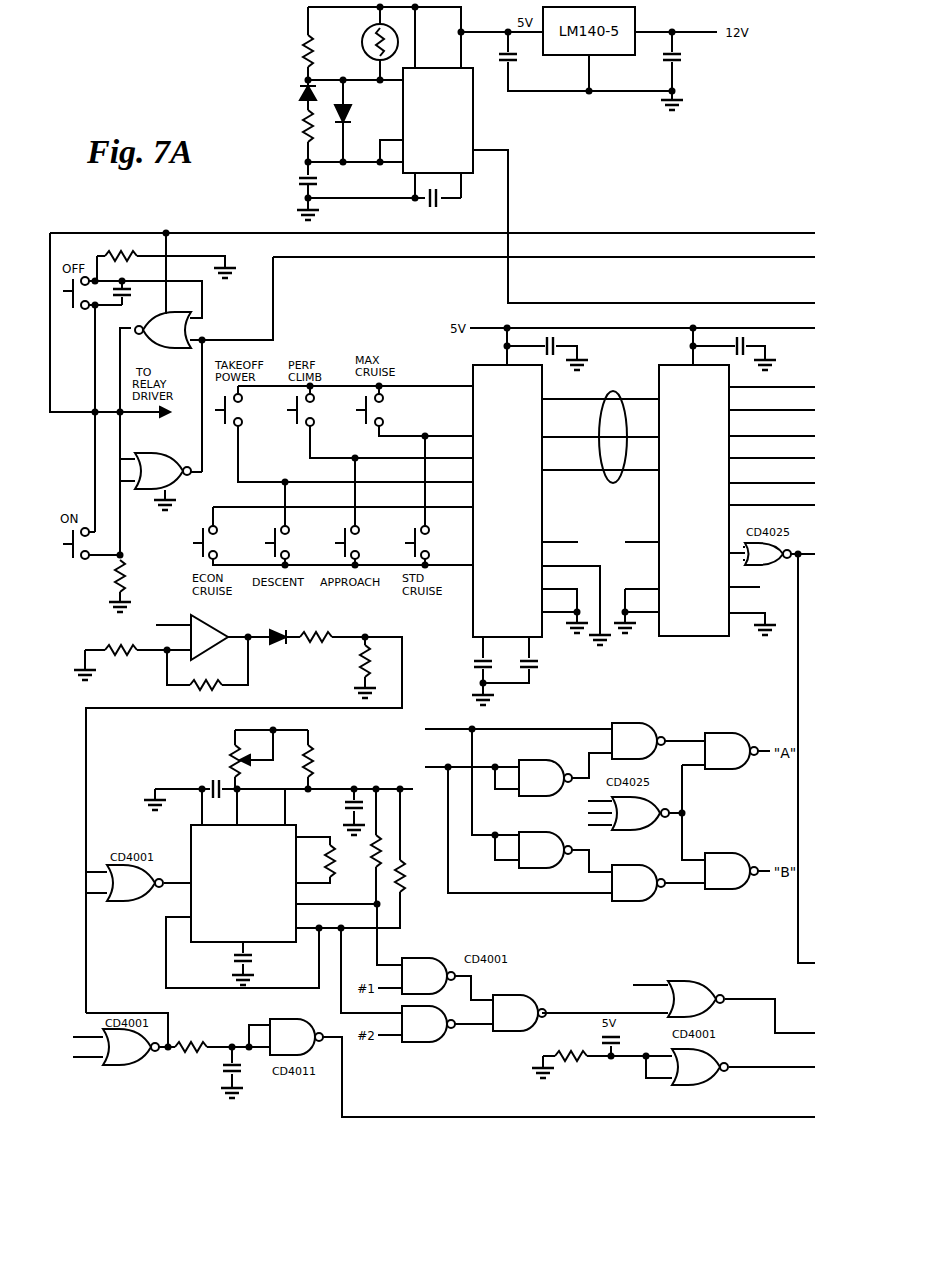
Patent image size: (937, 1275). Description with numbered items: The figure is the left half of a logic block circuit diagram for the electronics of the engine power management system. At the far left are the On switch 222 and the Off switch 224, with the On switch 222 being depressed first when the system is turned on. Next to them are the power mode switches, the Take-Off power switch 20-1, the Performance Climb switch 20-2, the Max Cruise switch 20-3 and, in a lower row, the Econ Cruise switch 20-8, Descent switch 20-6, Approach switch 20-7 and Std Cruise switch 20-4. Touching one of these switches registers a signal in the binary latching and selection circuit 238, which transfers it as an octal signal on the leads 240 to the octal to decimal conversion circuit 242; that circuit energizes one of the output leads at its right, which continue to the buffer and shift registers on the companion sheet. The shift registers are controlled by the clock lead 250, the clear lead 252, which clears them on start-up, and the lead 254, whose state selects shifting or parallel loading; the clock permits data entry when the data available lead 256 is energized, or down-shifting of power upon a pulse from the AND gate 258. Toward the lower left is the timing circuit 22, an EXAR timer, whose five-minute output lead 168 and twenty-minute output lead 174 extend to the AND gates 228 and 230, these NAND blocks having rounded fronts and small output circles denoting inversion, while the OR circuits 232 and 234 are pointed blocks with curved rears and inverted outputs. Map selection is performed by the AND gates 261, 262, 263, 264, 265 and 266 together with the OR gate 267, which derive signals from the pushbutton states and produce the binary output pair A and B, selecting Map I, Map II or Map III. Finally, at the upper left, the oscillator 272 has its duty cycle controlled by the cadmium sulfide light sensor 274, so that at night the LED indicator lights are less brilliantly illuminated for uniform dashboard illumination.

The cadmium sulfide light sensor 274 is at (363, 36).
The oscillator 272 is at (418, 161).
The Off switch 224 is at (73, 310).
The On switch 222 is at (80, 560).
The Take-Off power mode switch 20-1 is at (242, 425).
The power mode switch 20-2 is at (314, 426).
The power mode switch 20-3 is at (384, 402).
The power mode switch 20-4 is at (430, 537).
The power mode switch 20-6 is at (290, 537).
The power mode switch 20-7 is at (360, 537).
The power mode switch 20-8 is at (218, 537).
The binary latching and selection circuit 238 is at (489, 567).
The octal output leads 240 is at (612, 483).
The octal to decimal conversion circuit 242 is at (676, 567).
The timing circuit 22 is at (230, 924).
The five-minute output lead 168 is at (376, 903).
The twenty-minute output lead 174 is at (401, 905).
The OR circuit 232 is at (130, 905).
The OR circuit 234 is at (135, 1065).
The AND gate 228 is at (440, 958).
The AND gate 230 is at (422, 1044).
The AND gate 258 is at (535, 995).
The data available lead 256 is at (652, 983).
The clock lead 250 is at (752, 996).
The clear lead 252 is at (756, 1070).
The shift/load control lead 254 is at (598, 1117).
The AND gate 261 is at (642, 723).
The AND gate 262 is at (735, 733).
The AND gate 263 is at (536, 760).
The AND gate 264 is at (524, 868).
The AND gate 265 is at (627, 901).
The AND gate 266 is at (738, 889).
The OR gate 267 is at (640, 830).